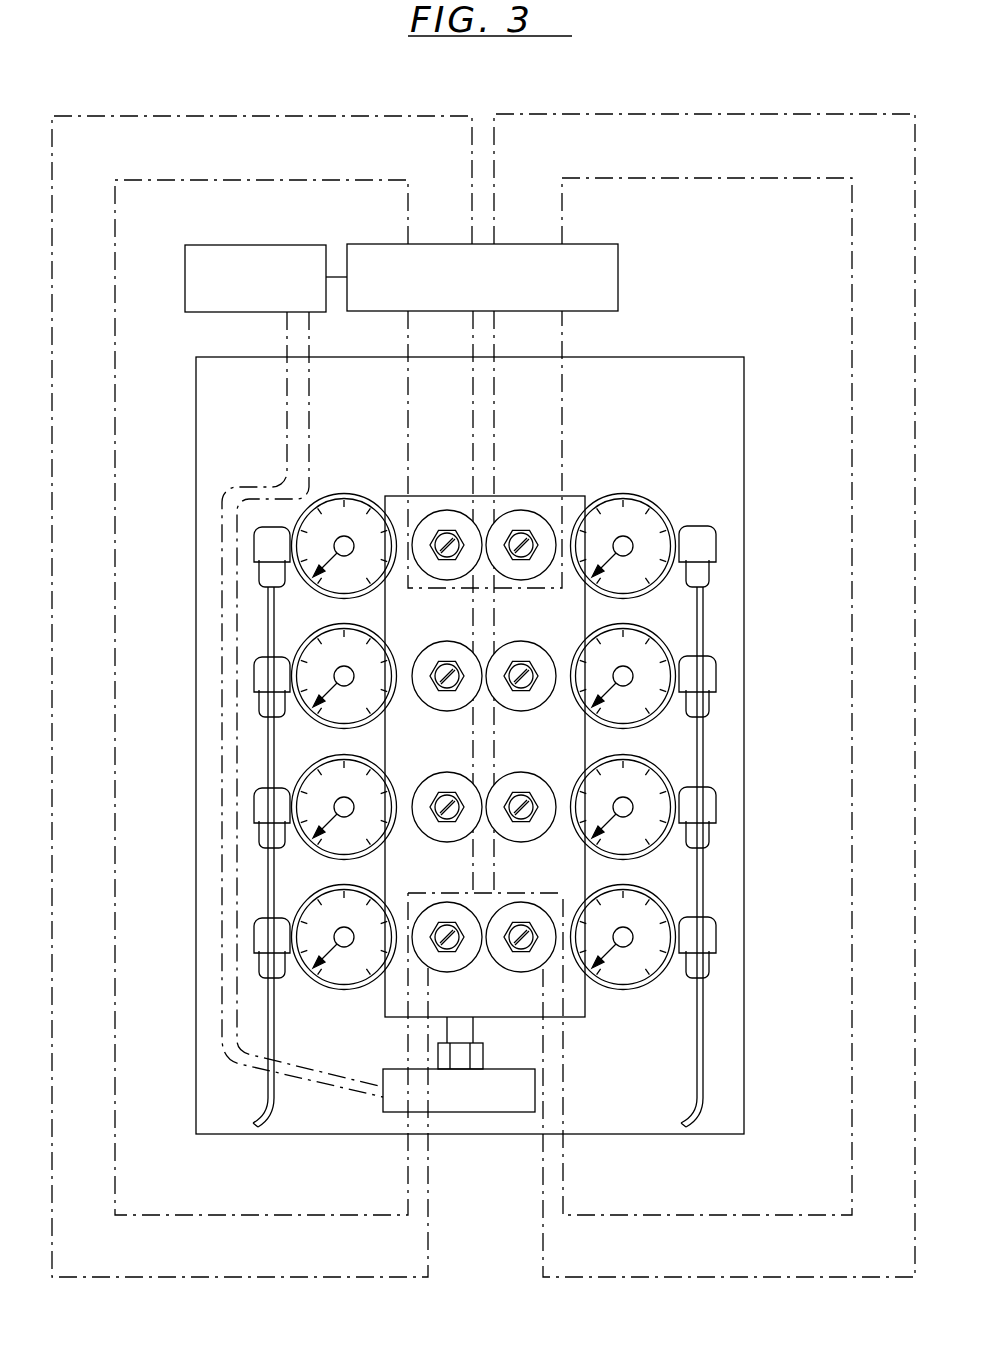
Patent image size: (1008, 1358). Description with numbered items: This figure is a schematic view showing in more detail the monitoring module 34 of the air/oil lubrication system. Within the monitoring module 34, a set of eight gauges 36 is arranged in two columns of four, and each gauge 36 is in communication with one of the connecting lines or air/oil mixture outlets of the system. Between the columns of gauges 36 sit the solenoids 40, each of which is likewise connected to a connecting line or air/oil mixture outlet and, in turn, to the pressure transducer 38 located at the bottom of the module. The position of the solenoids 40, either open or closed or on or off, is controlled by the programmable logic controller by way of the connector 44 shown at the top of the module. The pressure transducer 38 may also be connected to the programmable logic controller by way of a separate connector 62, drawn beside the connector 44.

The monitoring module 34 is at (755, 540).
The gauge 36 is at (332, 493).
The pressure transducer 38 is at (500, 1112).
The solenoid 40 is at (422, 515).
The connector 44 is at (618, 288).
The connector 62 is at (213, 245).